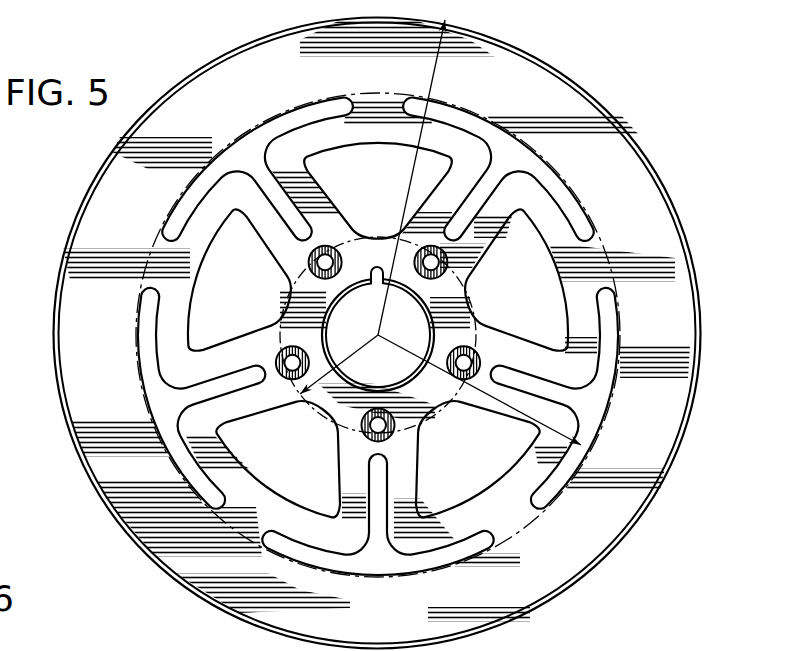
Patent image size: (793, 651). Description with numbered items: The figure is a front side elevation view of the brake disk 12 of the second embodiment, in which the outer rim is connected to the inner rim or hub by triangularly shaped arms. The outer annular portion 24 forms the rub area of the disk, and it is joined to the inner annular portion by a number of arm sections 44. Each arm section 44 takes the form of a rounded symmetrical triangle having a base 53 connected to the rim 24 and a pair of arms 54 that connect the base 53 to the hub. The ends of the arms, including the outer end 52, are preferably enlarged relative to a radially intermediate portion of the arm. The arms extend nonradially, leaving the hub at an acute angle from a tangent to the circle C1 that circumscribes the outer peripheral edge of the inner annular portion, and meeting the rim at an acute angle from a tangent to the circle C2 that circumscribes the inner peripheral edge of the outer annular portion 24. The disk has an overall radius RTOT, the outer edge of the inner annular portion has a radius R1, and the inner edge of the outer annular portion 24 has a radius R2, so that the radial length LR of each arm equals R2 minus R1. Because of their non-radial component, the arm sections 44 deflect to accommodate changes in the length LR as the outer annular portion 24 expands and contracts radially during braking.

The disk 12 is at (184, 66).
The outer annular portion 24 is at (294, 87).
The arm sections 44 is at (233, 180).
The outer end 52 is at (368, 502).
The base 53 is at (377, 336).
The arms 54 is at (454, 223).
The circle circumscribing outer peripheral edge of inner annular portion C1 is at (345, 335).
The circle circumscribing inner peripheral edge of outer annular portion C2 is at (602, 247).
The radius of outer peripheral edge of inner annular portion R1 is at (339, 355).
The radius of inner peripheral edge of outer annular portion R2 is at (588, 443).
The overall radius RTOT is at (452, 27).
The radial length of arms LR is at (161, 205).